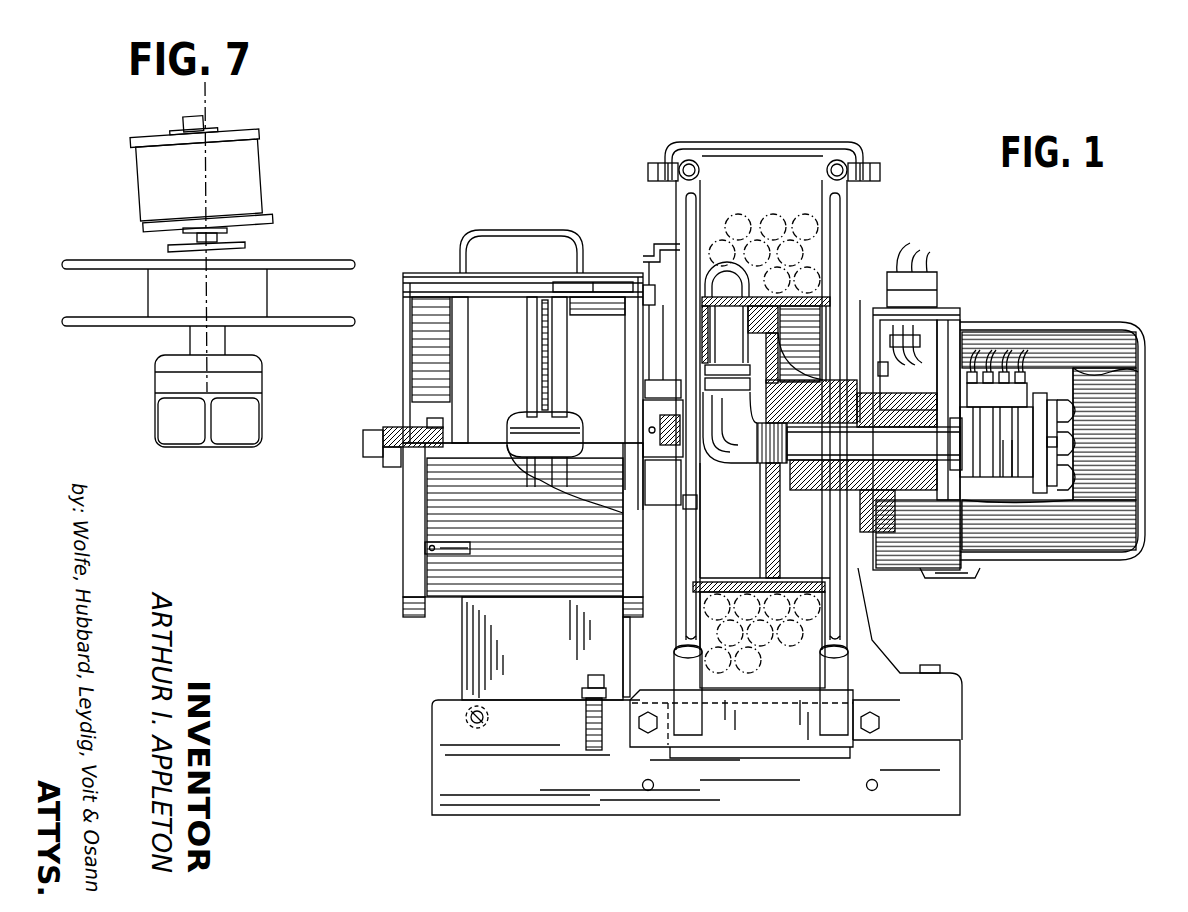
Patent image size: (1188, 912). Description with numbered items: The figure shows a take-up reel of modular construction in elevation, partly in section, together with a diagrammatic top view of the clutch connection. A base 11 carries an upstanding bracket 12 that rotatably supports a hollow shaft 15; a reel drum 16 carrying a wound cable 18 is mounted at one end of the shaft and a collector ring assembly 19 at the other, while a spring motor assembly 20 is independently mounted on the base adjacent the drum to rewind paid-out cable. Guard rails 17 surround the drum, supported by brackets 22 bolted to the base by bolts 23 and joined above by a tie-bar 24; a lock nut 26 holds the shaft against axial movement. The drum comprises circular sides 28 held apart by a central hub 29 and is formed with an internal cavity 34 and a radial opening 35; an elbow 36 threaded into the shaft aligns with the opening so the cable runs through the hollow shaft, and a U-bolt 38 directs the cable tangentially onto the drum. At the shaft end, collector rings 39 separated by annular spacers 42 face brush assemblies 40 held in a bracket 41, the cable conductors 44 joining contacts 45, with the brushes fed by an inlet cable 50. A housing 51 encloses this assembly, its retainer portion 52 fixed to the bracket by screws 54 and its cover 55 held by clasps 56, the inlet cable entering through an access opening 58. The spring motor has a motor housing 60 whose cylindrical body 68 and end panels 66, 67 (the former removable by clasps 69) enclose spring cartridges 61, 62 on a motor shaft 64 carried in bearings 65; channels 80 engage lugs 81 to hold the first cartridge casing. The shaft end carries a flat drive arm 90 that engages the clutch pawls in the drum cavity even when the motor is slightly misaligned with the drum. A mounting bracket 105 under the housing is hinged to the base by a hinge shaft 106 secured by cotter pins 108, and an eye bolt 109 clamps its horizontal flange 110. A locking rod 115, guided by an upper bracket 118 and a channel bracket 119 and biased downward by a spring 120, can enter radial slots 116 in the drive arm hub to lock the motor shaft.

In FIG. 1, the base 11 is at (946, 780).
In FIG. 1, the upstanding bracket 12 is at (882, 651).
In FIG. 1, the hollow shaft 15 is at (897, 406).
In FIG. 7, the reel drum 16 is at (112, 326).
In FIG. 1, the reel drum 16 is at (704, 208).
In FIG. 1, the guard rails 17 is at (676, 200).
In FIG. 1, the cable 18 is at (774, 226).
In FIG. 1, the collector ring assembly 19 is at (1005, 480).
In FIG. 7, the spring motor assembly 20 is at (267, 178).
In FIG. 1, the spring motor assembly 20 is at (401, 584).
In FIG. 1, the brackets 22 is at (710, 748).
In FIG. 1, the bolts 23 is at (646, 730).
In FIG. 1, the tie-bar 24 is at (775, 142).
In FIG. 1, the lock nut 26 is at (956, 470).
In FIG. 1, the circular sides 28 is at (686, 222).
In FIG. 1, the central hub 29 is at (743, 592).
In FIG. 1, the internal cylindrical cavity 34 is at (762, 548).
In FIG. 1, the radial opening 35 is at (722, 338).
In FIG. 1, the elbow 36 is at (732, 463).
In FIG. 1, the U-bolt 38 is at (728, 280).
In FIG. 1, the collector rings 39 is at (1022, 432).
In FIG. 1, the brush assemblies 40 is at (1028, 372).
In FIG. 1, the bracket 41 is at (1022, 396).
In FIG. 1, the annular spacers 42 is at (1013, 478).
In FIG. 1, the conductors 44 is at (1077, 430).
In FIG. 1, the contacts 45 is at (1077, 477).
In FIG. 1, the inlet cable 50 is at (905, 322).
In FIG. 7, the housing 51 is at (227, 449).
In FIG. 1, the housing 51 is at (1110, 562).
In FIG. 1, the retainer portion 52 is at (900, 576).
In FIG. 1, the screws 54 is at (888, 371).
In FIG. 1, the cover 55 is at (1110, 322).
In FIG. 1, the clasps 56 is at (956, 582).
In FIG. 1, the access opening 58 is at (920, 268).
In FIG. 1, the motor housing 60 is at (407, 283).
In FIG. 1, the first spring cartridge 61 is at (556, 300).
In FIG. 1, the second spring cartridge 62 is at (458, 300).
In FIG. 1, the motor shaft 64 is at (370, 433).
In FIG. 1, the bearings 65 is at (386, 425).
In FIG. 1, the end panel 66 is at (405, 619).
In FIG. 1, the end panel 67 is at (645, 618).
In FIG. 1, the cylindrical body 68 is at (497, 273).
In FIG. 1, the clasps 69 is at (432, 553).
In FIG. 1, the channels 80 is at (578, 286).
In FIG. 1, the lugs 81 is at (554, 287).
In FIG. 7, the drive arm 90 is at (247, 246).
In FIG. 1, the drive arm 90 is at (692, 509).
In FIG. 1, the mounting bracket 105 is at (461, 667).
In FIG. 1, the hinge shaft 106 is at (470, 720).
In FIG. 1, the cotter pins 108 is at (480, 732).
In FIG. 1, the eye bolt 109 is at (594, 675).
In FIG. 1, the horizontal flange 110 is at (582, 698).
In FIG. 1, the locking rod 115 is at (648, 256).
In FIG. 1, the radial slots 116 is at (660, 505).
In FIG. 1, the upper bracket 118 is at (650, 288).
In FIG. 1, the lower channel shaped bracket 119 is at (650, 384).
In FIG. 1, the spring 120 is at (658, 420).